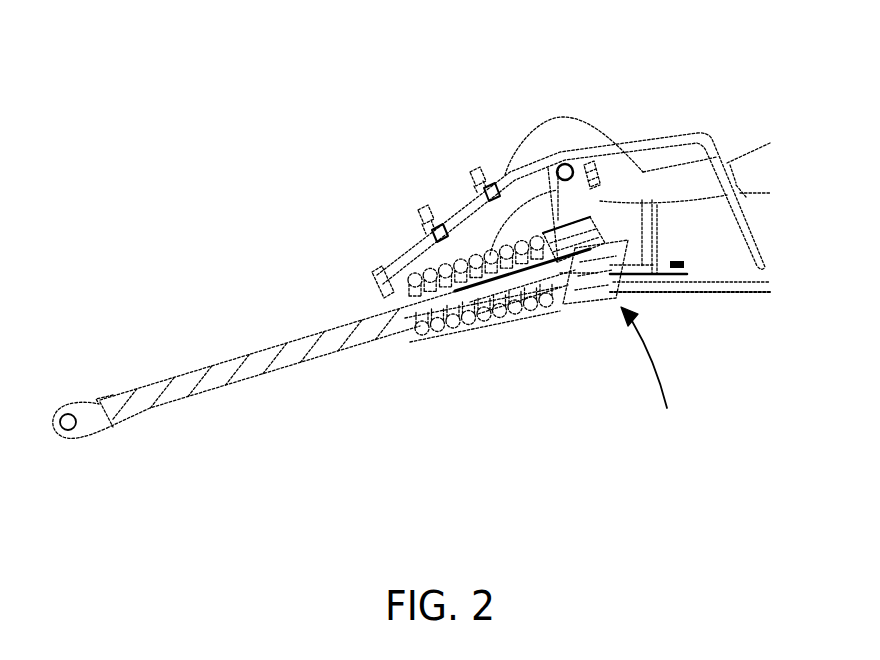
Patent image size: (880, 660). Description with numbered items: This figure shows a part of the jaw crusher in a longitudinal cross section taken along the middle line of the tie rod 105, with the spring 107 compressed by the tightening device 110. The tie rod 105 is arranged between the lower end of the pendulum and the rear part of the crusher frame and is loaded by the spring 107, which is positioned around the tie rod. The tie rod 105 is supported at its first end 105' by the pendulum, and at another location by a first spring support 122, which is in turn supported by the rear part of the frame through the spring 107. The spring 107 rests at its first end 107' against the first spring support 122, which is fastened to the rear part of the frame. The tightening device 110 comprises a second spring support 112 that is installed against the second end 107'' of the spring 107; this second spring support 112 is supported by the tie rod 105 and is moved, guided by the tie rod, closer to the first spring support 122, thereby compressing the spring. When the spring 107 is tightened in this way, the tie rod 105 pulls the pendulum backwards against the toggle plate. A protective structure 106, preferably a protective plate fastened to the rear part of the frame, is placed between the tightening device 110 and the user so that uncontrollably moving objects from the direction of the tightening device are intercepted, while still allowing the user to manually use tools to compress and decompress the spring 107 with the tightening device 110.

The tie rod 105 is at (285, 379).
The first end of the tie rod 105' is at (83, 465).
The protective structure 106 is at (673, 141).
The spring 107 is at (499, 345).
The first end of the spring 107' is at (484, 347).
The second end of the spring 107'' is at (549, 320).
The tightening device 110 is at (657, 378).
The second spring support 112 is at (563, 297).
The first spring support 122 is at (410, 337).